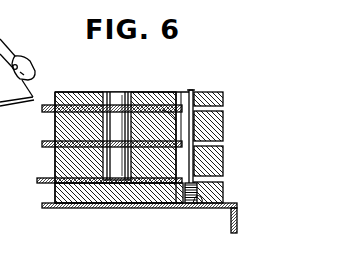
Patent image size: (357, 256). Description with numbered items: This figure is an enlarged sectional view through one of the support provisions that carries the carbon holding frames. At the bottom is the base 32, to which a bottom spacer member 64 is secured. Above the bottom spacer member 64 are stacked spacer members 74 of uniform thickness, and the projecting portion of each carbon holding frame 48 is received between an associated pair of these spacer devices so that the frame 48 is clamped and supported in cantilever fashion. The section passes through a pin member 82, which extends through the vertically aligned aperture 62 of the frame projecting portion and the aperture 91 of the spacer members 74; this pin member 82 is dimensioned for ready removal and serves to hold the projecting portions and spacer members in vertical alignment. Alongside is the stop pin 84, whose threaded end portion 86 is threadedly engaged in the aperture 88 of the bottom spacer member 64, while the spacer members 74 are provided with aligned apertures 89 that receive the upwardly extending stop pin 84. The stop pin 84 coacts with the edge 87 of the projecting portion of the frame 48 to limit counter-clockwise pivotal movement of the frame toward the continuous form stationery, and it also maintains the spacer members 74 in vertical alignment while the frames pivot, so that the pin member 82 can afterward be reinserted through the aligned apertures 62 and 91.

The base 32 is at (135, 207).
The carbon holding frame 48 is at (49, 103).
The aperture 62 is at (128, 97).
The bottom spacer member 64 is at (97, 196).
The spacer member 74 is at (77, 128).
The pin member 82 is at (104, 100).
The stop pin 84 is at (196, 92).
The threaded end portion 86 is at (180, 205).
The edge 87 is at (184, 137).
The aperture 88 is at (202, 204).
The aperture 89 is at (167, 100).
The aperture 91 is at (71, 124).